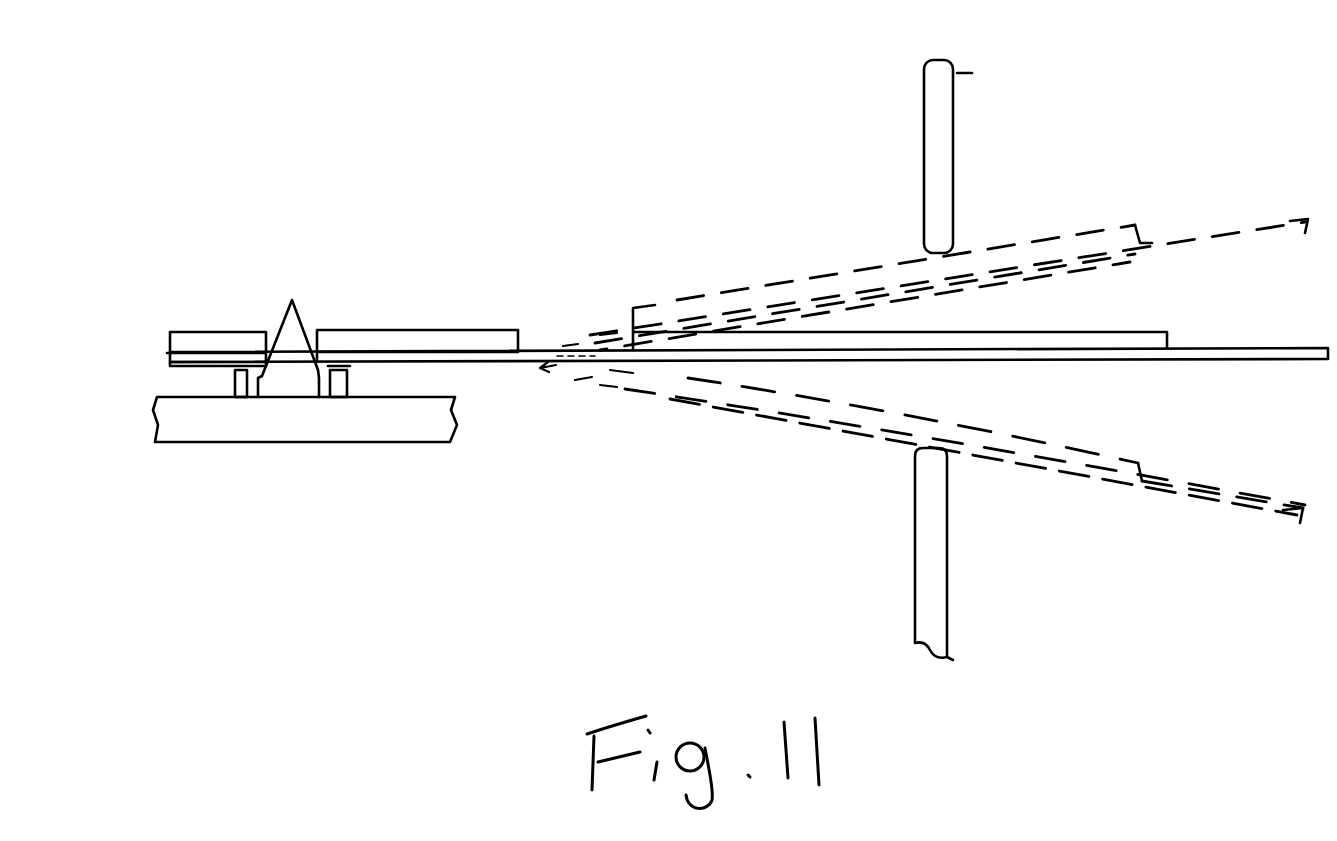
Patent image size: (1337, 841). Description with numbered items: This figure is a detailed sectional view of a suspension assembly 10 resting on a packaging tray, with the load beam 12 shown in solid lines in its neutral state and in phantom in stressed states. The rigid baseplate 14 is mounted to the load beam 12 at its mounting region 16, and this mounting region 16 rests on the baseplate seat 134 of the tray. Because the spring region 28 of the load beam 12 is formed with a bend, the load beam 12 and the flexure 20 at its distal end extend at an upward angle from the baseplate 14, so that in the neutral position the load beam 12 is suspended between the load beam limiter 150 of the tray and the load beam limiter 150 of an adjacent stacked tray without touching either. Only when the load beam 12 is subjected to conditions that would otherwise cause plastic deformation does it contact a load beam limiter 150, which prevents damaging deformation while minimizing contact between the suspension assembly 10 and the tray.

The suspension assembly 10 is at (512, 300).
The load beam 12 is at (1127, 330).
The baseplate 14 is at (395, 345).
The mounting region 16 is at (467, 364).
The flexure 20 is at (1222, 358).
The spring region 28 is at (583, 372).
The baseplate seat 134 is at (298, 448).
The load beam limiter 150 is at (953, 115).